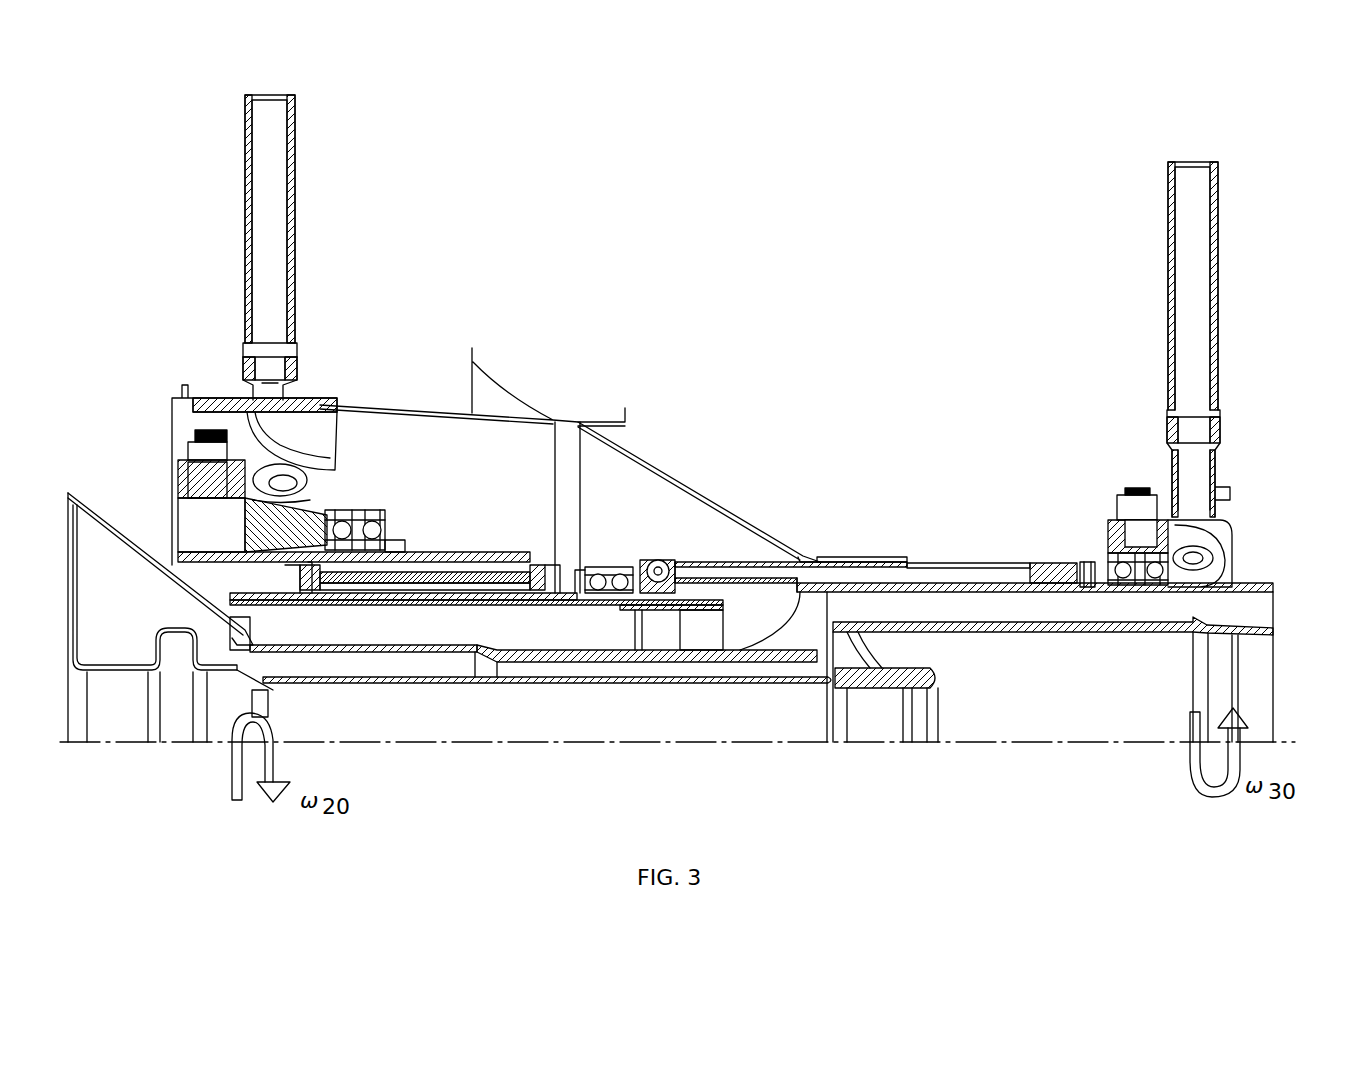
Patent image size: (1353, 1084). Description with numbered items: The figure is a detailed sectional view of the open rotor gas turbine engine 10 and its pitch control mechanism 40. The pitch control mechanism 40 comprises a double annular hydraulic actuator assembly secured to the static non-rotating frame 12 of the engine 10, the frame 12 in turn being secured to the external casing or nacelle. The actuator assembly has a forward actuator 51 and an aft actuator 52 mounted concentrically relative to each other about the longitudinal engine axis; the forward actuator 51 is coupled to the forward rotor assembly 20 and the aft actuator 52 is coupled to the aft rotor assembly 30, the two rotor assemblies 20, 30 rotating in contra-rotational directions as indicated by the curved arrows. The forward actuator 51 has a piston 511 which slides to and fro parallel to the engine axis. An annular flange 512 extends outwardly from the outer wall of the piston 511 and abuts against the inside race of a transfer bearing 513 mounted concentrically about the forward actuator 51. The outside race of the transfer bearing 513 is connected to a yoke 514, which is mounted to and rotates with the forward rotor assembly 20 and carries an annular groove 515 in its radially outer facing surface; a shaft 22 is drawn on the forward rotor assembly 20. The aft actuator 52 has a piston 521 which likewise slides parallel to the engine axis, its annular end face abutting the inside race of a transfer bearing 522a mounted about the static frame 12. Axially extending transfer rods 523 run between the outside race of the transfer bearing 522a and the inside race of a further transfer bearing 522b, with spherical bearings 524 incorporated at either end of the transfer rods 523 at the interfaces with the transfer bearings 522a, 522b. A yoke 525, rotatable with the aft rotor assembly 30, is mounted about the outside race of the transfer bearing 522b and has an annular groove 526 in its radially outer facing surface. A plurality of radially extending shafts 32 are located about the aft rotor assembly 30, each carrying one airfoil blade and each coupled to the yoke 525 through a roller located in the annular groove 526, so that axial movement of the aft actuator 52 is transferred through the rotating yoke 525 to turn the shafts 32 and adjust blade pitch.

The open rotor gas turbine engine 10 is at (738, 391).
The pitch control mechanism 40 is at (692, 425).
The static non-rotating frame 12 is at (92, 503).
The forward rotor assembly 20 is at (430, 405).
The forward rotor shaft 22 is at (240, 190).
The aft rotor assembly 30 is at (117, 675).
The radially extending shaft 32 is at (1165, 232).
The forward actuator 51 is at (339, 489).
The piston 511 is at (455, 553).
The annular flange 512 is at (398, 540).
The transfer bearing 513 is at (353, 525).
The yoke 514 is at (185, 477).
The annular groove 515 is at (208, 473).
The aft actuator 52 is at (332, 607).
The piston 521 is at (565, 590).
The transfer bearing 522a is at (605, 573).
The further transfer bearing 522b is at (1137, 580).
The transfer rod 523 is at (910, 556).
The spherical bearing 524 is at (660, 560).
The yoke 525 is at (1108, 545).
The annular groove 526 is at (1133, 530).